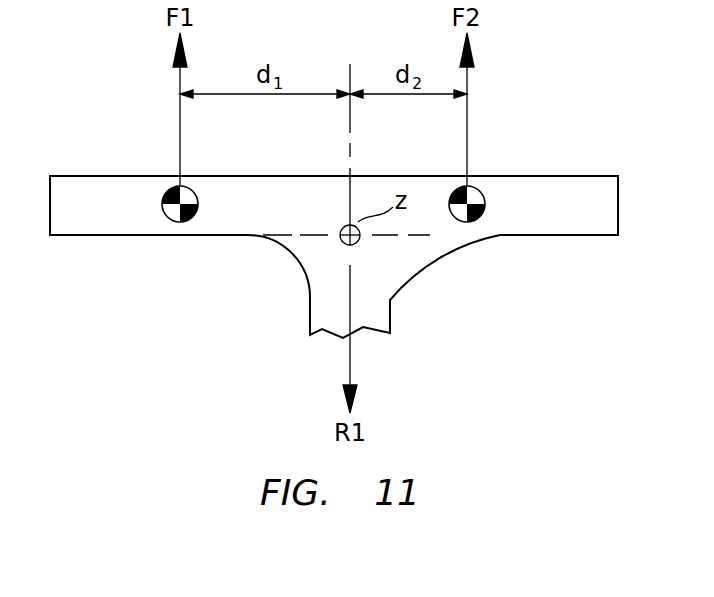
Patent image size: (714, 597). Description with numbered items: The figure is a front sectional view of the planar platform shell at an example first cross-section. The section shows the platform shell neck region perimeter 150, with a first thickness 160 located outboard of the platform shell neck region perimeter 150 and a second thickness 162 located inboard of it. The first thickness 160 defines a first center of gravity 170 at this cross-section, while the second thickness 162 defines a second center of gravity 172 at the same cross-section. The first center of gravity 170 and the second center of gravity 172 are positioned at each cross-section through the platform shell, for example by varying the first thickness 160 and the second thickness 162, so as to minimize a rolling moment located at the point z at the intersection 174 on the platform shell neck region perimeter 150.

The platform shell neck region perimeter 150 is at (337, 313).
The first thickness 160 is at (83, 197).
The second thickness 162 is at (567, 198).
The first center of gravity 170 is at (167, 191).
The second center of gravity 172 is at (473, 192).
The intersection 174 is at (356, 244).